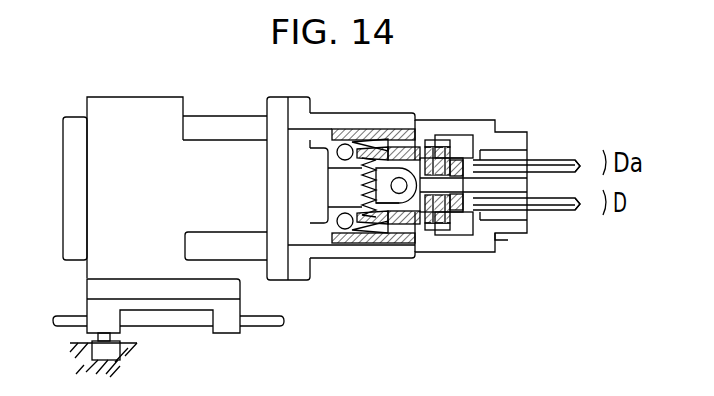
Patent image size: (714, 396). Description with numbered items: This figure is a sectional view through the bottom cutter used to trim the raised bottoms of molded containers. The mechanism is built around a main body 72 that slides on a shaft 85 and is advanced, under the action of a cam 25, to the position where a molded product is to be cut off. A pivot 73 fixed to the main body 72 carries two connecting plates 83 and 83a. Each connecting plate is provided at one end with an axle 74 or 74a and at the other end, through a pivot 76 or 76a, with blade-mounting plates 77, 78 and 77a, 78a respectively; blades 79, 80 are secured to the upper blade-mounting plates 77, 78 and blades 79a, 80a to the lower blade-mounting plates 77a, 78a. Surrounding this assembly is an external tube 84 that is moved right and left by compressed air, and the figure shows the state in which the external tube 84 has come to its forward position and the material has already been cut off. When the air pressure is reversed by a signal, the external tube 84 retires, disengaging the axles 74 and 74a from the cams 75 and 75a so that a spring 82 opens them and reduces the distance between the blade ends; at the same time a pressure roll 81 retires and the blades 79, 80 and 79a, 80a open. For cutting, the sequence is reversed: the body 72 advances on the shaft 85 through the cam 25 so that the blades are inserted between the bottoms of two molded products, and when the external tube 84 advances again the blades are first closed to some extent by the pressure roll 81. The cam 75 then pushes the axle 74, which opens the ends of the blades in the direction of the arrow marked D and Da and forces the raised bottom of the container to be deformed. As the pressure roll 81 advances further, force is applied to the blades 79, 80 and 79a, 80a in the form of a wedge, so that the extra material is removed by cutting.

The cam 25 is at (120, 352).
The main body 72 is at (122, 110).
The pivot 73 is at (401, 148).
The axle 74 is at (368, 142).
The axle 74a is at (348, 228).
The cam 75 is at (347, 147).
The cam 75a is at (338, 246).
The pivot 76 is at (437, 150).
The pivot 76a is at (439, 231).
The blade-mounting plate 77 is at (486, 140).
The blade-mounting plate 77a is at (490, 238).
The blade-mounting plate 78 is at (470, 157).
The blade-mounting plate 78a is at (478, 236).
The blade 79 is at (560, 160).
The blade 79a is at (550, 212).
The blade 80 is at (580, 163).
The blade 80a is at (566, 211).
The pressure roll 81 is at (520, 150).
The spring 82 is at (360, 181).
The connecting plate 83 is at (398, 184).
The connecting plate 83a is at (390, 232).
The external tube 84 is at (297, 107).
The shaft 85 is at (262, 322).